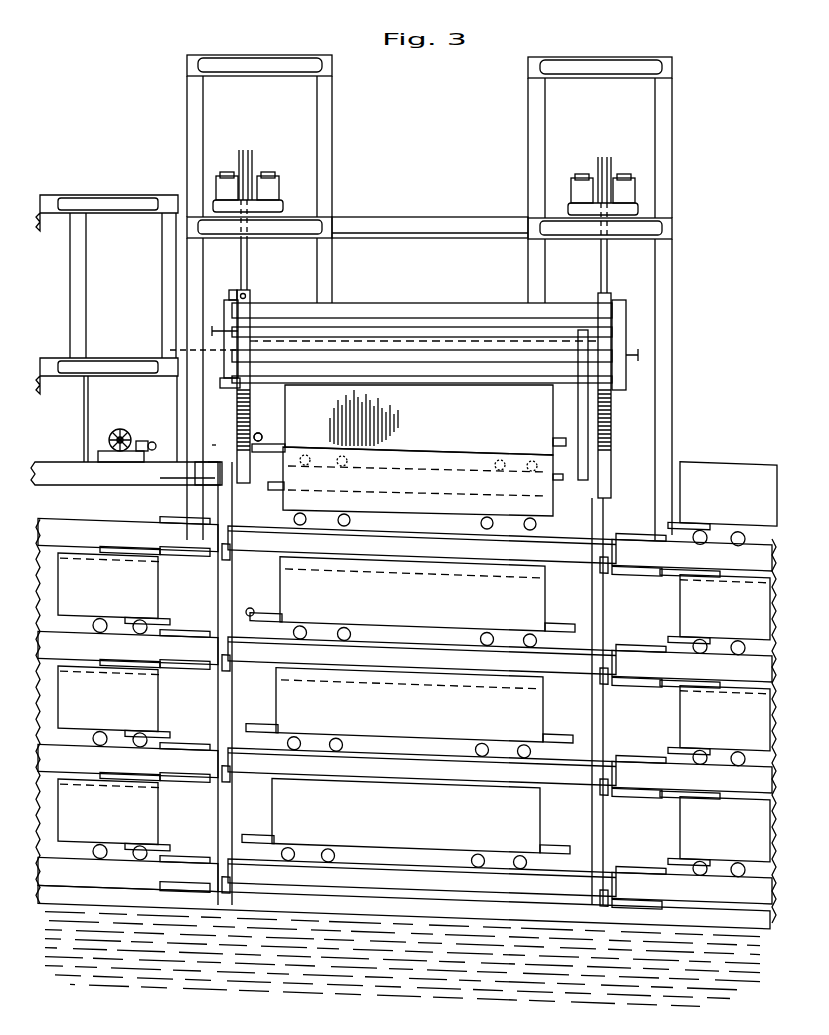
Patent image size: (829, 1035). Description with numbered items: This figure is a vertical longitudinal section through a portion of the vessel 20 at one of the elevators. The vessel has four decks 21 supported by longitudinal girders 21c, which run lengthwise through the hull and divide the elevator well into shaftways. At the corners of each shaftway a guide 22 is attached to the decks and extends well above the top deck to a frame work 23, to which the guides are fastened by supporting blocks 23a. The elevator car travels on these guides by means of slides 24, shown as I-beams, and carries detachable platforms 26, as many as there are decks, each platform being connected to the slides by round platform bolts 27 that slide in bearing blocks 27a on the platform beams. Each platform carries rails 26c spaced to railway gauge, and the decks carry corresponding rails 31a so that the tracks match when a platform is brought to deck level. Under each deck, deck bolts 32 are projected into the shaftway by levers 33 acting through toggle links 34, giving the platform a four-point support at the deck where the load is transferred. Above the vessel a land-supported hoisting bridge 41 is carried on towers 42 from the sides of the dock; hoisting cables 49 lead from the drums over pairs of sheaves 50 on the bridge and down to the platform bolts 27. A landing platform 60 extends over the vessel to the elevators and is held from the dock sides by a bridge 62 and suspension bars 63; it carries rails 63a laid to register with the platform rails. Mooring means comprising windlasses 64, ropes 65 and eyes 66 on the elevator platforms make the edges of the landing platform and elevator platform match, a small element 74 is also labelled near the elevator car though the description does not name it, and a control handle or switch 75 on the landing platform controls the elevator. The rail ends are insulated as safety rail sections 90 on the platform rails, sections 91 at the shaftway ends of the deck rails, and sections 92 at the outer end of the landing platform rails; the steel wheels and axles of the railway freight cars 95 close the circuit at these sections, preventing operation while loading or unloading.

The vessel 20 is at (770, 848).
The decks 21 is at (58, 612).
The longitudinal girders 21c is at (68, 550).
The guide 22 is at (620, 462).
The frame work 23 is at (228, 300).
The supporting blocks 23a is at (212, 331).
The slides 24 is at (256, 394).
The detachable platforms 26 is at (378, 318).
The rails 26c is at (452, 330).
The platform bolts 27 is at (240, 540).
The bearing blocks 27a is at (232, 560).
The rails 31a is at (80, 522).
The deck bolts 32 is at (186, 550).
The levers 33 is at (100, 552).
The toggle links 34 is at (140, 550).
The hoisting bridge 41 is at (332, 119).
The towers 42 is at (188, 267).
The hoisting cables 49 is at (252, 290).
The sheaves 50 is at (252, 176).
The landing platform 60 is at (78, 470).
The bridge 62 is at (128, 196).
The suspension bars 63 is at (84, 412).
The rails 63a is at (162, 482).
The windlasses 64 is at (124, 429).
The ropes 65 is at (214, 460).
The eyes 66 is at (248, 296).
The roller 74 is at (262, 436).
The control handle or switch 75 is at (162, 436).
The rail sections 90 is at (598, 476).
The sections 91 is at (200, 552).
The sections 92 is at (205, 472).
The railway freight cars 95 is at (417, 625).